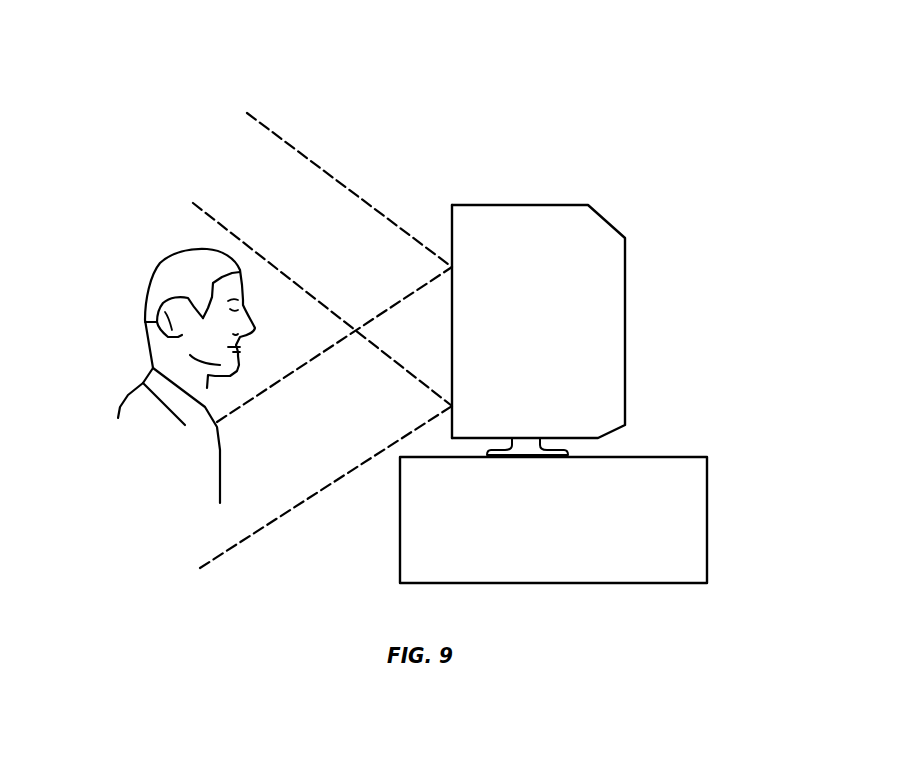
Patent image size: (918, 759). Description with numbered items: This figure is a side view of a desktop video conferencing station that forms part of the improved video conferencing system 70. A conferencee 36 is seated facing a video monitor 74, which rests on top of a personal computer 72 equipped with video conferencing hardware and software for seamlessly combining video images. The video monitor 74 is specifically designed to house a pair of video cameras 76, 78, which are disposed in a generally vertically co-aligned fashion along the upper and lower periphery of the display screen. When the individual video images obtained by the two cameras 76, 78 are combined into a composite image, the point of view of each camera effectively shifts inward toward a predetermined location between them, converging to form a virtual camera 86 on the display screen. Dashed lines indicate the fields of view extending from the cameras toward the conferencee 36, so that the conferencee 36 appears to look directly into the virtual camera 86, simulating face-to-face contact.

The conferencee 36 is at (158, 265).
The display system 70 is at (682, 147).
The personal computer 72 is at (695, 456).
The video monitor 74 is at (606, 221).
The video camera 76 is at (452, 213).
The video camera 78 is at (452, 417).
The virtual camera 86 is at (449, 289).